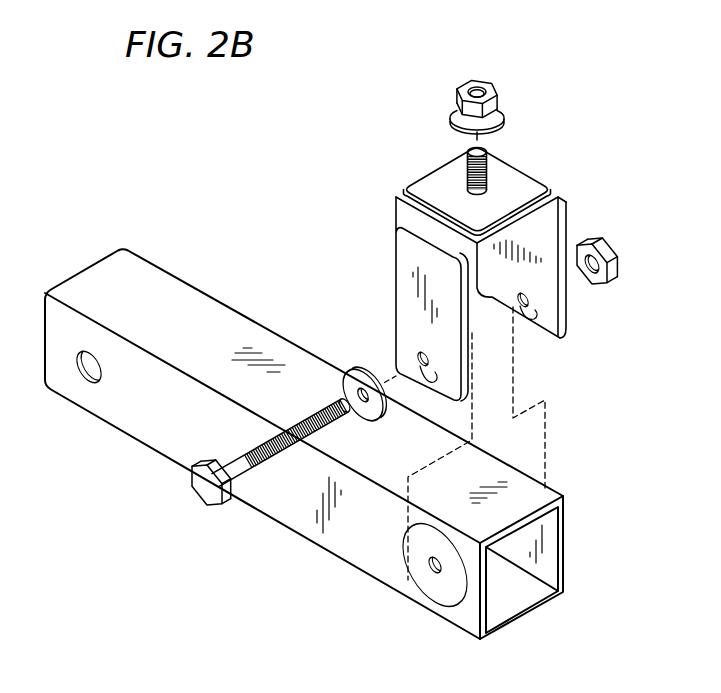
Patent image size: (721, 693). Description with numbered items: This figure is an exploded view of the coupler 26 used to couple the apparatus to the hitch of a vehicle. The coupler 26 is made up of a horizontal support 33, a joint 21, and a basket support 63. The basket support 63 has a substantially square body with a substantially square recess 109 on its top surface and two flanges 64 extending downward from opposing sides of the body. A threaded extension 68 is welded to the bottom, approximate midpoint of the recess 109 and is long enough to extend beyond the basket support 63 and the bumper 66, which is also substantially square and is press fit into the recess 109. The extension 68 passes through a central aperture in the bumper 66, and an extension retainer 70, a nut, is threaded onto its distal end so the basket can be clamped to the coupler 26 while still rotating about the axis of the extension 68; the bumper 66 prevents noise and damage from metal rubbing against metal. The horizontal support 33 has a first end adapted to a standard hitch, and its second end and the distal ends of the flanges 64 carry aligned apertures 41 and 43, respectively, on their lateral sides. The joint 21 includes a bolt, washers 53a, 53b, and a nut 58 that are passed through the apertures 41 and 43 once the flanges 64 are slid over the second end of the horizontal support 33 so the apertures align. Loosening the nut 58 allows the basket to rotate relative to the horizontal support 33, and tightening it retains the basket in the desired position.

The joint 21 is at (207, 490).
The coupler 26 is at (161, 566).
The horizontal support 33 is at (142, 423).
The aperture 41 is at (470, 393).
The aperture 43 is at (527, 302).
The washer 53a is at (355, 377).
The washer 53b is at (448, 590).
The nut 58 is at (615, 256).
The basket support 63 is at (492, 358).
The flange 64 is at (405, 310).
The bumper 66 is at (442, 178).
The threaded extension 68 is at (486, 177).
The extension retainer 70 is at (482, 110).
The recess 109 is at (537, 218).